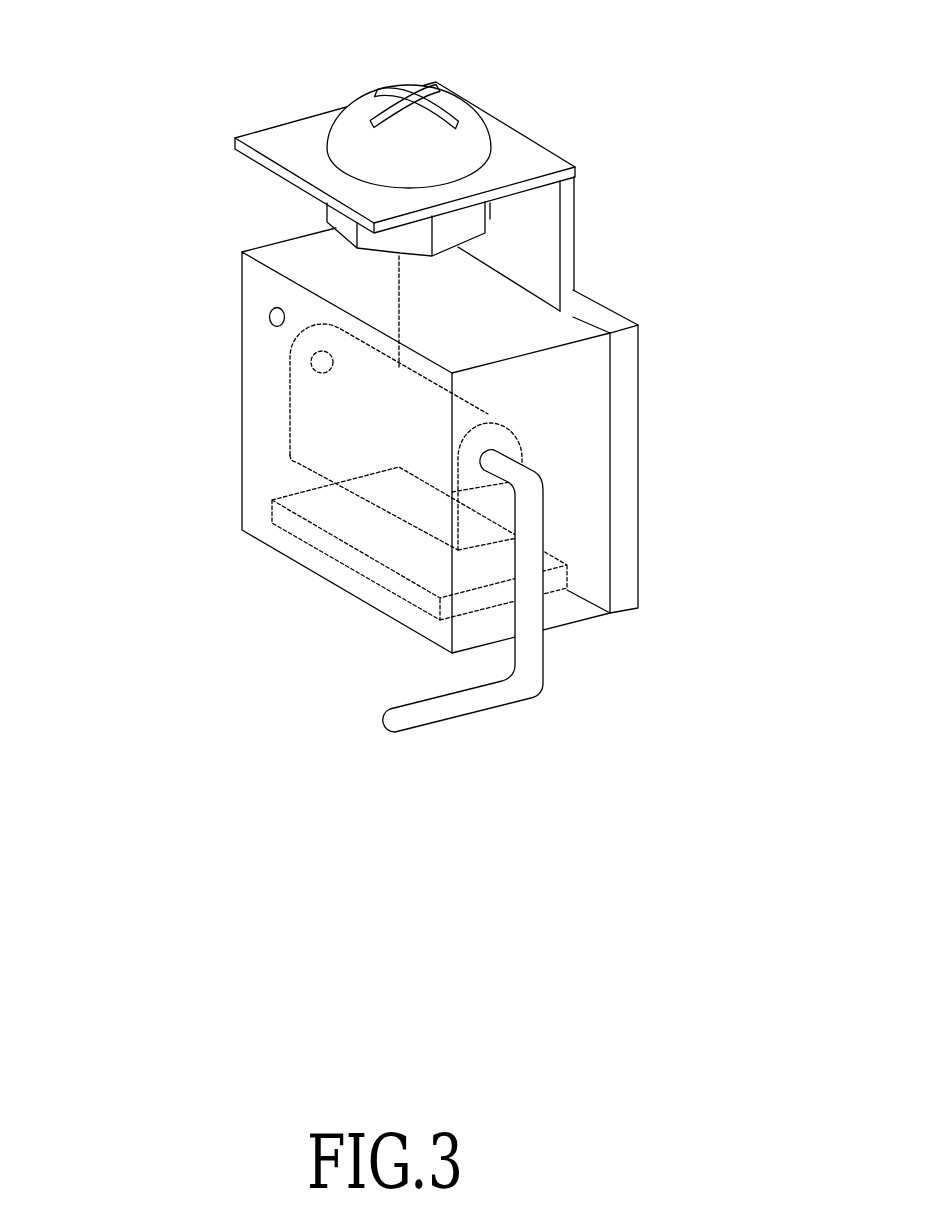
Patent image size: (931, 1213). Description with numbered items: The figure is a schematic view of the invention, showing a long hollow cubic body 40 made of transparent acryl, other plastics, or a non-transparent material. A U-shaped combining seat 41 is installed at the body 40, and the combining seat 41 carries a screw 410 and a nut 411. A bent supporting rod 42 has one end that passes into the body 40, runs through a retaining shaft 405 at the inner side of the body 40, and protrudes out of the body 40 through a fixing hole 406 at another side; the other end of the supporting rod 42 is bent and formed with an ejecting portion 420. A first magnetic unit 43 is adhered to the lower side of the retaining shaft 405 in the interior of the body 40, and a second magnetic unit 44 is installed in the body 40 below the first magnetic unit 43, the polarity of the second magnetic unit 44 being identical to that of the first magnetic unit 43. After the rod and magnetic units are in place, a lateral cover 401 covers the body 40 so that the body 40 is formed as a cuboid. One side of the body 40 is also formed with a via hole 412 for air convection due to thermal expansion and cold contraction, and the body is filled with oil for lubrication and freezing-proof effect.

The body 40 is at (488, 440).
The combining seat 41 is at (433, 196).
The supporting rod 42 is at (532, 591).
The first magnetic unit 43 is at (353, 562).
The second magnetic unit 44 is at (441, 607).
The lateral cover 401 is at (694, 451).
The retaining shaft 405 is at (282, 437).
The fixing hole 406 is at (187, 352).
The screw 410 is at (448, 103).
The nut 411 is at (291, 263).
The via hole 412 is at (187, 299).
The ejecting portion 420 is at (542, 719).